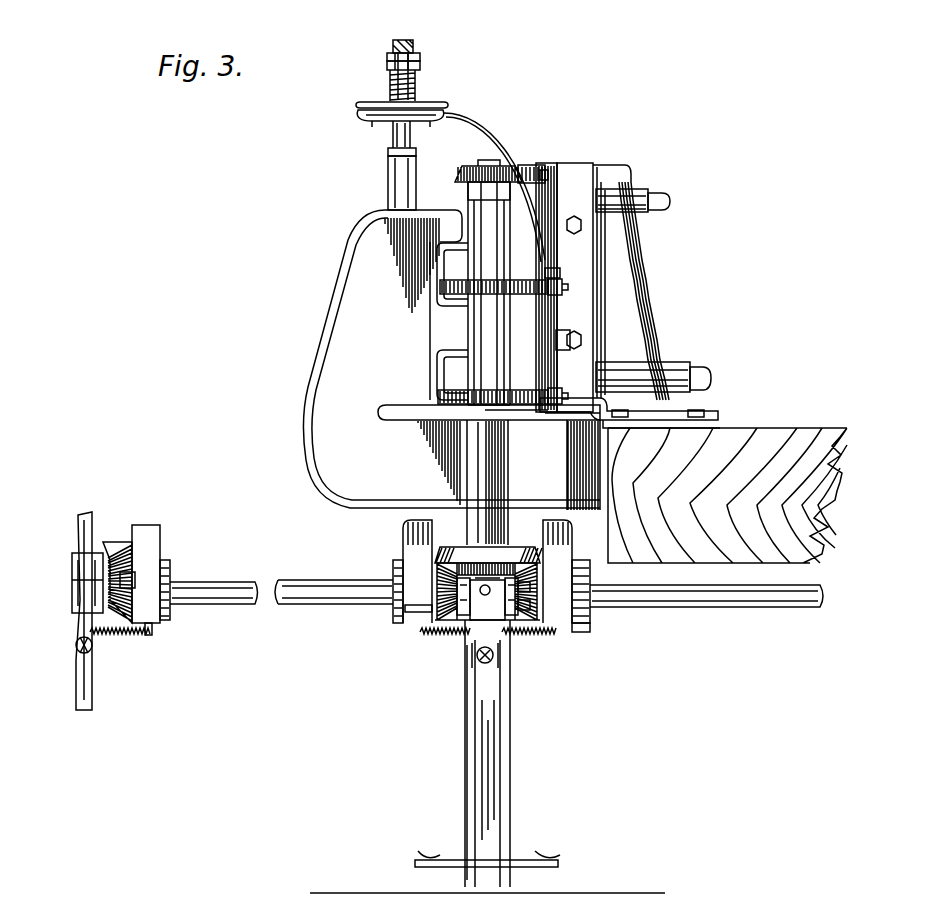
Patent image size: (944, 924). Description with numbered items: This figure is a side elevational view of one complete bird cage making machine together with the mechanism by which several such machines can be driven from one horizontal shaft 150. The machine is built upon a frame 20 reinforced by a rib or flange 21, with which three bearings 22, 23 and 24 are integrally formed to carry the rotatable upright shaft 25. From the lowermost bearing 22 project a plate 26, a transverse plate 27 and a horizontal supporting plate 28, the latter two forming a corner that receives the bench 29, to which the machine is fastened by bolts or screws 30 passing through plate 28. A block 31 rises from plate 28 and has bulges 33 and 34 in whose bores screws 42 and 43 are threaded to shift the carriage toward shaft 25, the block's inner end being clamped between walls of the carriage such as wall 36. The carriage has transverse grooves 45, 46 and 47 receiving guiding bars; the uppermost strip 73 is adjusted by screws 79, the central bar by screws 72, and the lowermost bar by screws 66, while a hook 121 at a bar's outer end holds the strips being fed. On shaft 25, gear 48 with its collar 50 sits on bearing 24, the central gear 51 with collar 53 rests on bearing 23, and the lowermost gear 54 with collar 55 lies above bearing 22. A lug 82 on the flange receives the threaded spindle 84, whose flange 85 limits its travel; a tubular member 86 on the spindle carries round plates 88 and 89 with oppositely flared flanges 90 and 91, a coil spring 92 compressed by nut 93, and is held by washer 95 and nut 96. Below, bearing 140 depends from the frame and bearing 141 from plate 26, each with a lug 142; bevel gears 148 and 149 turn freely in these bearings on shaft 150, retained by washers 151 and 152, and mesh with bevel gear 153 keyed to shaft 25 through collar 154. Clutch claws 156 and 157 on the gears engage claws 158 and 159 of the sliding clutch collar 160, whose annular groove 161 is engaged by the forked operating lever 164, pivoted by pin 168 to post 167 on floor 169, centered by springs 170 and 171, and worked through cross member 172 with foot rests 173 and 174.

The spindle 84 is at (400, 42).
The nut 96 is at (414, 47).
The washer 95 is at (421, 56).
The nut 93 is at (421, 66).
The coil spring 92 is at (416, 85).
The flange 91 is at (366, 103).
The round plate 89 is at (444, 110).
The flange 90 is at (375, 122).
The tubular member 86 is at (395, 138).
The washer or flange 85 is at (416, 152).
The lug 82 is at (390, 190).
The round plate 88 is at (450, 120).
The upright shaft 25 is at (487, 164).
The gear 48 is at (466, 174).
The collar 50 is at (480, 196).
The bearing 23 is at (490, 340).
The collar 53 is at (456, 258).
The central gear 51 is at (450, 284).
The collar 55 is at (460, 369).
The lowermost gear 54 is at (446, 394).
The rib or flange 21 is at (312, 400).
The frame 20 is at (345, 475).
The horizontal supporting plate 28 is at (565, 416).
The bearing 22 is at (497, 498).
The plate 27 is at (600, 455).
The plate 26 is at (498, 465).
The longitudinal strip 73 is at (540, 172).
The transverse groove 45 is at (532, 165).
The bearing 24 is at (560, 196).
The screws 79 is at (577, 175).
The lug or wall 36 is at (610, 188).
The bulge 33 is at (622, 200).
The screw 42 is at (668, 205).
The transverse groove 46 is at (550, 273).
The block 31 is at (620, 266).
The screws 72 is at (562, 285).
The transverse groove 47 is at (566, 345).
The lowermost screws 66 is at (550, 390).
The bulge 34 is at (654, 373).
The screw 43 is at (705, 379).
The bolts or screws 30 is at (642, 414).
The bench or support 29 is at (780, 432).
The bearing 140 is at (405, 550).
The collar 154 is at (474, 536).
The bevel gear 153 is at (512, 550).
The washer 151 is at (392, 614).
The bevel gear 149 is at (572, 613).
The horizontal shaft 150 is at (333, 605).
The hook 121 is at (706, 586).
The bevel gear 148 is at (420, 608).
The clutch claws 156 is at (460, 616).
The clutch claws 158 is at (470, 616).
The clutch claws 159 is at (509, 616).
The clutch collar 160 is at (522, 612).
The clutch claws 157 is at (540, 628).
The spring 170 is at (460, 622).
The screw or pin 168 is at (480, 652).
The spring 171 is at (522, 634).
The washer 152 is at (590, 630).
The operating lever 164 is at (486, 792).
The post 167 is at (465, 769).
The cross member 172 is at (436, 866).
The foot rest 173 is at (427, 857).
The foot rest 174 is at (548, 856).
The floor 169 is at (600, 893).
The annular groove 161 is at (104, 543).
The bearing 141 is at (156, 546).
The lug 142 is at (152, 630).